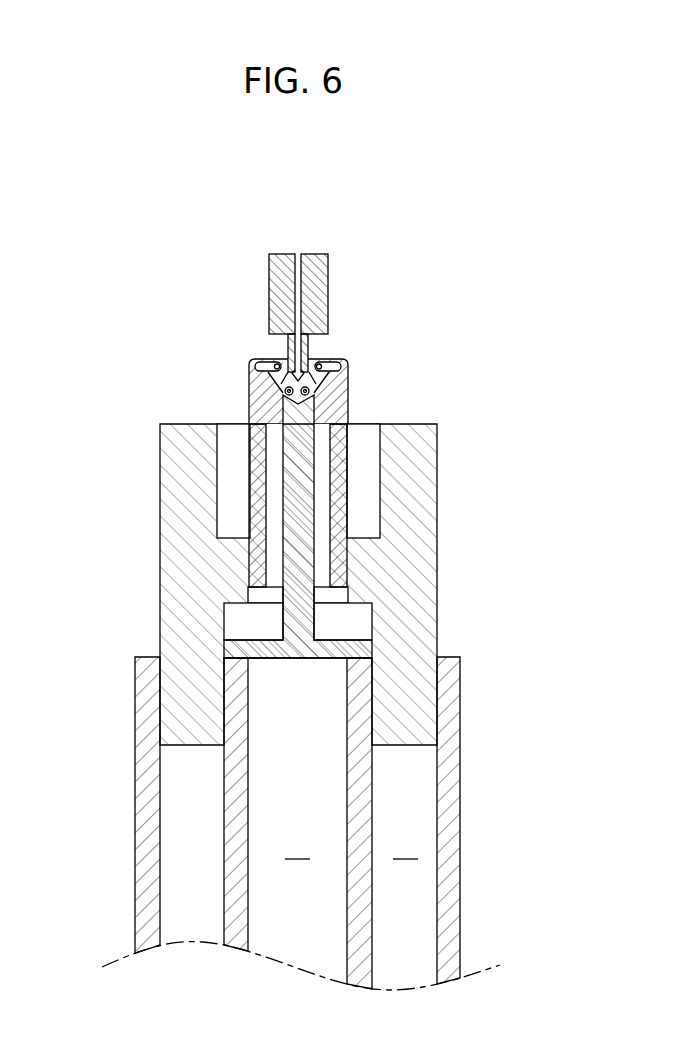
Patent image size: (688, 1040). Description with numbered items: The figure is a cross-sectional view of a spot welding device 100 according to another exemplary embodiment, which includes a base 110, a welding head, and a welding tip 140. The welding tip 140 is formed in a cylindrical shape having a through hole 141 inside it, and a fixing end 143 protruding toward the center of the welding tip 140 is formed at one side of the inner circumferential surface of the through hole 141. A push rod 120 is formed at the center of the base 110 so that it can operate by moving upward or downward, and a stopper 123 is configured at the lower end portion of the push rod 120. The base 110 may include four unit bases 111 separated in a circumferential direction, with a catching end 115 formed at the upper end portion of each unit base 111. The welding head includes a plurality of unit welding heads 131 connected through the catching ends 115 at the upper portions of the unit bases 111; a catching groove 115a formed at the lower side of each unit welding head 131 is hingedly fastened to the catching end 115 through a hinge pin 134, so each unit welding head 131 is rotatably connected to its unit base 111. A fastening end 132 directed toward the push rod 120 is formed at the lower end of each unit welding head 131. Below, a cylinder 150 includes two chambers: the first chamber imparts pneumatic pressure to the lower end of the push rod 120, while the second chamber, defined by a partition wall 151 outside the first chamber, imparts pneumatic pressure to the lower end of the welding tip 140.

The spot welding device 100 is at (82, 266).
The base 110 is at (357, 453).
The unit base 111 is at (338, 480).
The catching end 115 is at (250, 359).
The catching groove 115a is at (258, 363).
The push rod 120 is at (298, 514).
The stopper 123 is at (347, 647).
The unit welding head 131 is at (322, 278).
The fastening end 132 is at (284, 394).
The hinge pin 134 is at (322, 350).
The welding tip 140 is at (417, 560).
The through hole 141 is at (220, 482).
The fixing end 143 is at (233, 572).
The cylinder 150 is at (447, 835).
The partition wall 151 is at (362, 780).